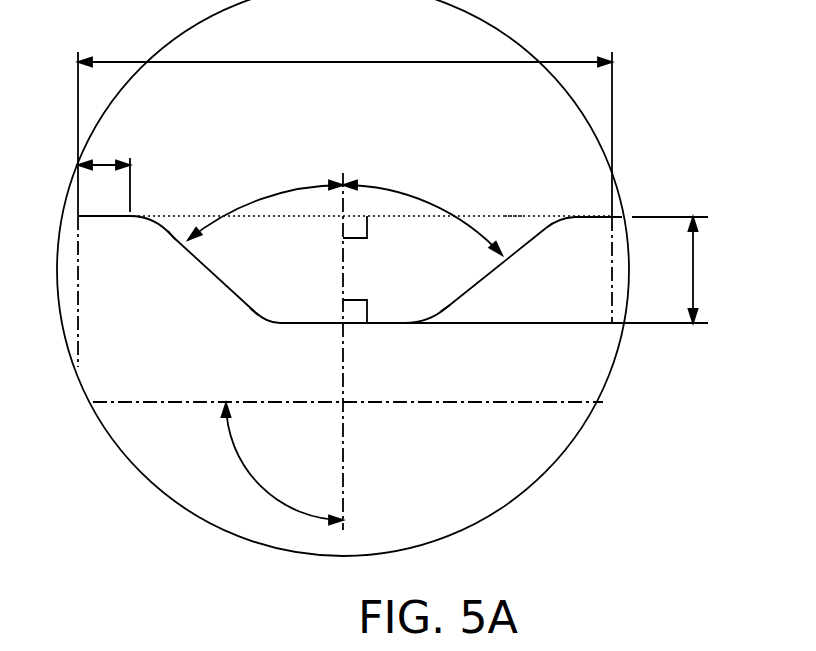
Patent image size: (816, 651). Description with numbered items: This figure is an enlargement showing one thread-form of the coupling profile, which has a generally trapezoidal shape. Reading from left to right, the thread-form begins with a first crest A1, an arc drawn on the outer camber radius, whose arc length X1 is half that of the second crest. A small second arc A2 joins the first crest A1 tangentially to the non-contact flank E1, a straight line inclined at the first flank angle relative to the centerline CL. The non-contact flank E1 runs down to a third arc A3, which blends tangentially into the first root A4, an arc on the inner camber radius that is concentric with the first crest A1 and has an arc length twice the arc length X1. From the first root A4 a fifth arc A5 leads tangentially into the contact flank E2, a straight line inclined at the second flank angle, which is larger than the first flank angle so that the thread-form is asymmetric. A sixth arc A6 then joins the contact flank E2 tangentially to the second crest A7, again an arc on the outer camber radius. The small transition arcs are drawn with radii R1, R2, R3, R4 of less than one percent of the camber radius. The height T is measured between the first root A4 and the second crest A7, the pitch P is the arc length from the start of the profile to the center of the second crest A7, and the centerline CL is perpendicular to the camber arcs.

The pitch P is at (362, 62).
The arc length X1 is at (102, 163).
The first crest A1 is at (90, 217).
The second arc A2 is at (173, 238).
The third arc A3 is at (250, 306).
The first root A4 is at (328, 324).
The fifth arc A5 is at (445, 309).
The sixth arc A6 is at (514, 217).
The second crest A7 is at (590, 217).
The first radius R1 is at (152, 241).
The second radius R2 is at (264, 301).
The third radius R3 is at (428, 294).
The fourth radius R4 is at (555, 241).
The non-contact flank E1 is at (200, 266).
The contact flank E2 is at (487, 277).
The centerline CL is at (343, 270).
The height T is at (695, 270).